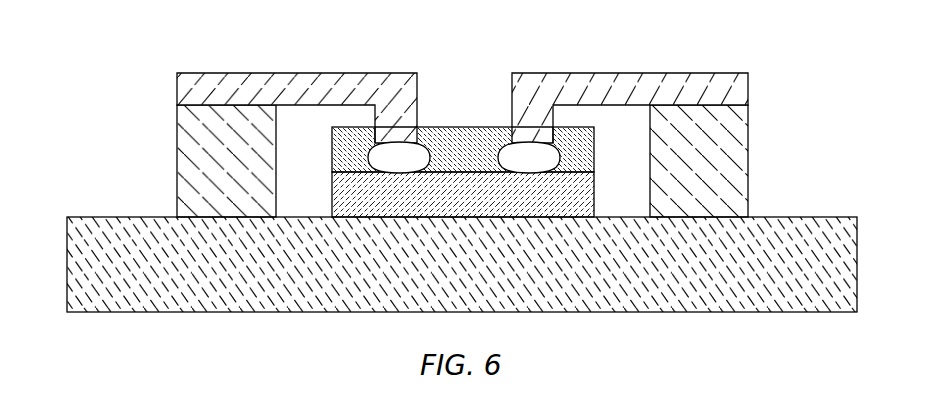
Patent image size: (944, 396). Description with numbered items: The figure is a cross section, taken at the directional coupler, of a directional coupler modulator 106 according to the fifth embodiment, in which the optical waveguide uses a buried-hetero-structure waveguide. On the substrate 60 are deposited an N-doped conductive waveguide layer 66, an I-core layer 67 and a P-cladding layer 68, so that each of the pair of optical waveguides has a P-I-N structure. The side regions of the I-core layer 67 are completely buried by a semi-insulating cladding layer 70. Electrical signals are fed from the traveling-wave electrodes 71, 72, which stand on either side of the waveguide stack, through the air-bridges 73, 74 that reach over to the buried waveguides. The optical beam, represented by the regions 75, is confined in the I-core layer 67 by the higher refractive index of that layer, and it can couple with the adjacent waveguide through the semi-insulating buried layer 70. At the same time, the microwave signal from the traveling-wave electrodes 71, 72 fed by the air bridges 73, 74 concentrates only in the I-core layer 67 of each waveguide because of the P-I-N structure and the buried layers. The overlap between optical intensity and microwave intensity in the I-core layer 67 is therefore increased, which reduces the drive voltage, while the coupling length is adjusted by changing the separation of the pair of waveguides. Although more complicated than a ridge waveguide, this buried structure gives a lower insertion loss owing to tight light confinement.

The directional coupler modulator 106 is at (127, 55).
The substrate 60 is at (476, 274).
The N-doped conductive waveguide layer 66 is at (479, 206).
The semi-insulating cladding layer 70 is at (364, 160).
The traveling-wave electrode 71 is at (183, 163).
The traveling-wave electrode 72 is at (747, 163).
The air-bridge 73 is at (306, 74).
The air-bridge 74 is at (620, 76).
The optical beam regions 75 is at (529, 154).
The I-core layer 67 is at (539, 140).
The P-cladding layer 68 is at (518, 135).